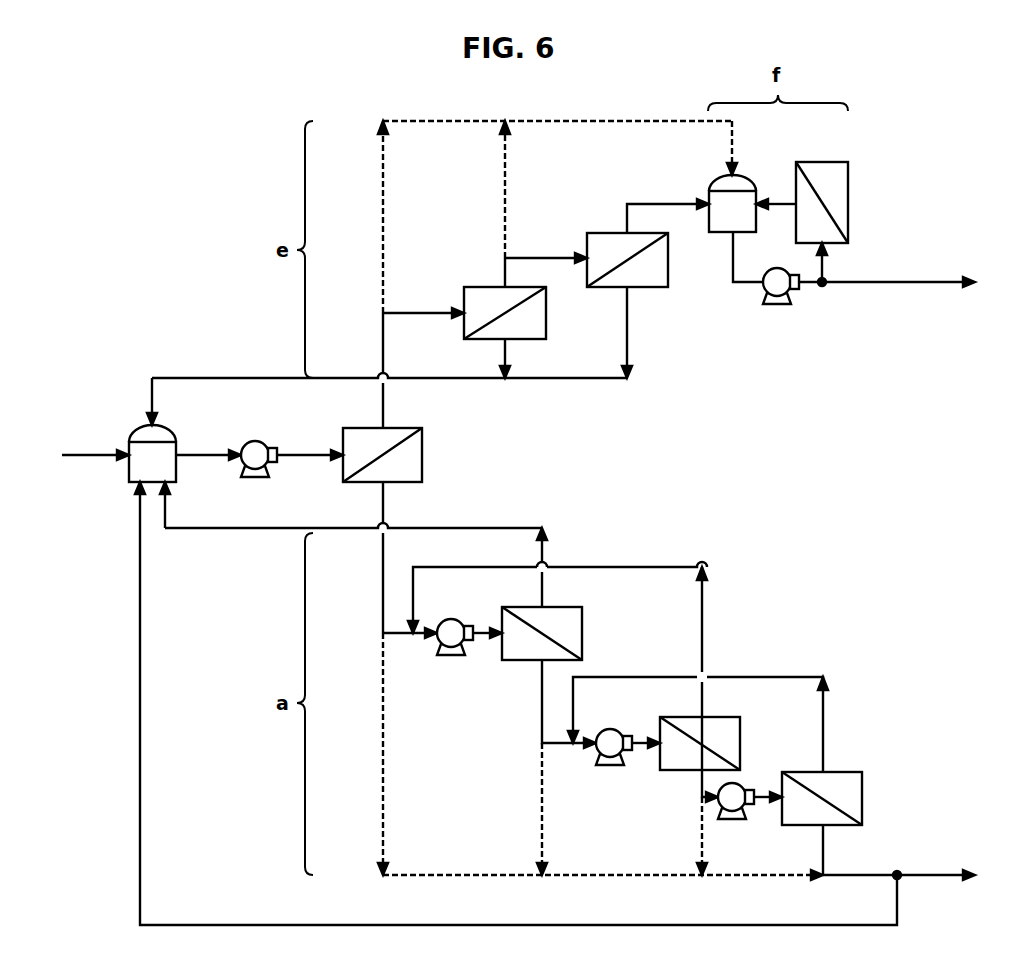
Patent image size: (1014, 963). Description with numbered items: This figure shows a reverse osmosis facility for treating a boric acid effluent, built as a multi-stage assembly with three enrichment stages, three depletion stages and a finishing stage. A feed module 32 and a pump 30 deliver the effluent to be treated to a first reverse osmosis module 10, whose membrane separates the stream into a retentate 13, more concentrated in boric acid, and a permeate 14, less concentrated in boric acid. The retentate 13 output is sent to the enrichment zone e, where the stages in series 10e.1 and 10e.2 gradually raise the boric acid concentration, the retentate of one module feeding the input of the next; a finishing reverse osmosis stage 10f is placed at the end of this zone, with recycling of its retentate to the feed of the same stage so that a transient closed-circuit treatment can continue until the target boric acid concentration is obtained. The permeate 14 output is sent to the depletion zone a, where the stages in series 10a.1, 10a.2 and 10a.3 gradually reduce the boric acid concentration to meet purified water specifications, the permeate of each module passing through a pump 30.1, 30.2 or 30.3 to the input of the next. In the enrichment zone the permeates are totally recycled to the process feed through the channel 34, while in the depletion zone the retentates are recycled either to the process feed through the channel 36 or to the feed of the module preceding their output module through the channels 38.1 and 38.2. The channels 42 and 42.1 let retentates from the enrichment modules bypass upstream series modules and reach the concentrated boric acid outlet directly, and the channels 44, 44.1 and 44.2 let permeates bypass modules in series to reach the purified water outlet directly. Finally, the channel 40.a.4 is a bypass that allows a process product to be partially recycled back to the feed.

The reverse osmosis module 10 is at (422, 456).
The depletion stage 10a.1 is at (582, 633).
The depletion stage 10a.2 is at (740, 742).
The depletion stage 10a.3 is at (862, 796).
The enrichment stage 10e.1 is at (490, 287).
The enrichment stage 10e.2 is at (610, 233).
The finishing reverse osmosis stage 10f is at (848, 204).
The retentate 13 is at (383, 412).
The permeate 14 is at (383, 497).
The pump 30 is at (258, 441).
The pump 30.1 is at (464, 622).
The pump 30.2 is at (624, 732).
The pump 30.3 is at (746, 790).
The feed module 32 is at (129, 466).
The channel 34 is at (268, 378).
The channel 36 is at (266, 531).
The channel 38.1 is at (620, 567).
The channel 38.2 is at (760, 677).
The channel 40.a.4 is at (140, 715).
The channel 42 is at (383, 222).
The channel 42.1 is at (505, 195).
The channel 44 is at (383, 748).
The channel 44.1 is at (542, 800).
The channel 44.2 is at (702, 835).